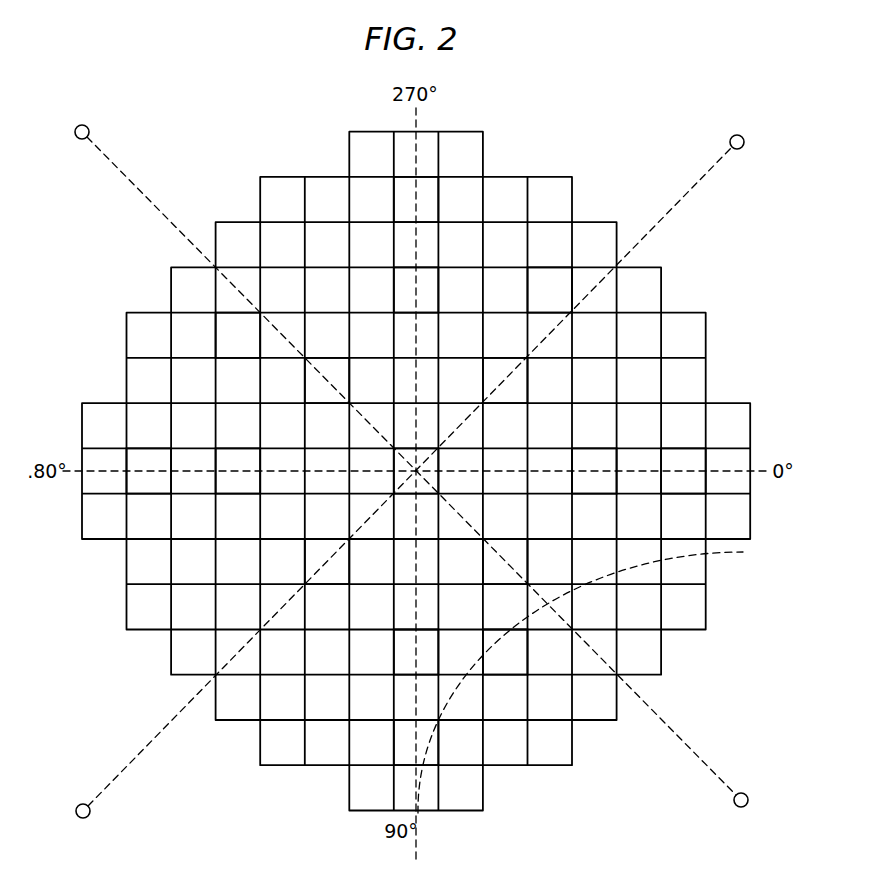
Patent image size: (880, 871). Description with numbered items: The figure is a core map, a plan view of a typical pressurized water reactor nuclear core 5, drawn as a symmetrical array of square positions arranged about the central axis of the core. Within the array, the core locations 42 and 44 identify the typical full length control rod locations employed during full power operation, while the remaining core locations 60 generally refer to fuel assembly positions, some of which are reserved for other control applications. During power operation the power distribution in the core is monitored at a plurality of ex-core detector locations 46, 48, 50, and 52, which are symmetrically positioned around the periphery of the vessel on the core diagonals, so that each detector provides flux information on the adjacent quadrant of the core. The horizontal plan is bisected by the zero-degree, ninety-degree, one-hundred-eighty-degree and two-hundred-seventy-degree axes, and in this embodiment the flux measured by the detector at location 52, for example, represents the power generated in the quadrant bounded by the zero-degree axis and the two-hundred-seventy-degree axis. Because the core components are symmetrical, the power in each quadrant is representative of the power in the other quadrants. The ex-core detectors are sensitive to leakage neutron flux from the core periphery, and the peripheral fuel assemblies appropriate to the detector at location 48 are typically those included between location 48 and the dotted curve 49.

The pressurized water reactor nuclear core 5 is at (221, 770).
The core locations 42 is at (416, 471).
The core locations 44 is at (416, 470).
The remaining core locations 60 is at (226, 346).
The ex-core detector location 46 is at (81, 805).
The ex-core detector location 48 is at (746, 794).
The dotted curve 49 is at (738, 551).
The ex-core detector location 50 is at (81, 123).
The ex-core detector location 52 is at (742, 136).